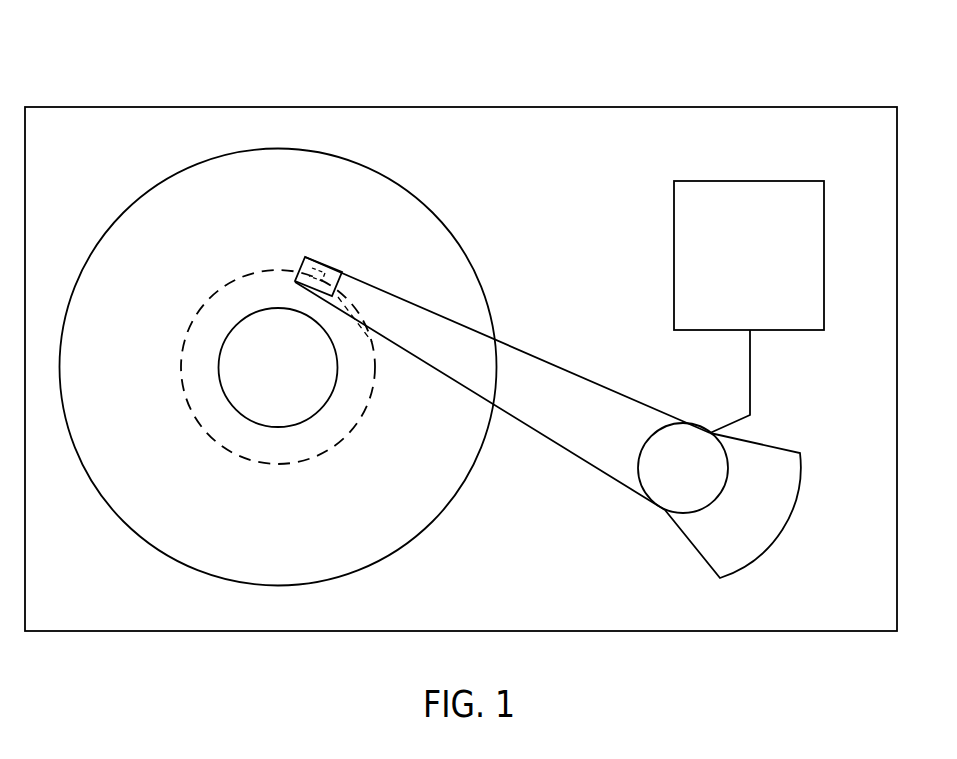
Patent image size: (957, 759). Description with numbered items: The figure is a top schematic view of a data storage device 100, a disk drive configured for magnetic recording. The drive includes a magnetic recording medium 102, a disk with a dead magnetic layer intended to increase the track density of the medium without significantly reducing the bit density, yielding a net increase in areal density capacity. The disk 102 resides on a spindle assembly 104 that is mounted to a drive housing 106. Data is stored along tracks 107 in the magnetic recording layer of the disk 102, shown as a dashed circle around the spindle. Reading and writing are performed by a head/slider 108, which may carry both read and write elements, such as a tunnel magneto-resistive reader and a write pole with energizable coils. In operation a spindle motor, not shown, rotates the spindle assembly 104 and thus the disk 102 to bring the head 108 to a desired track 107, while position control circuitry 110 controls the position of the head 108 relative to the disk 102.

The data storage device 100 is at (218, 70).
The magnetic recording medium 102 is at (407, 190).
The spindle assembly 104 is at (298, 371).
The drive housing 106 is at (604, 107).
The tracks 107 is at (249, 275).
The head/slider 108 is at (330, 277).
The position control circuitry 110 is at (765, 270).